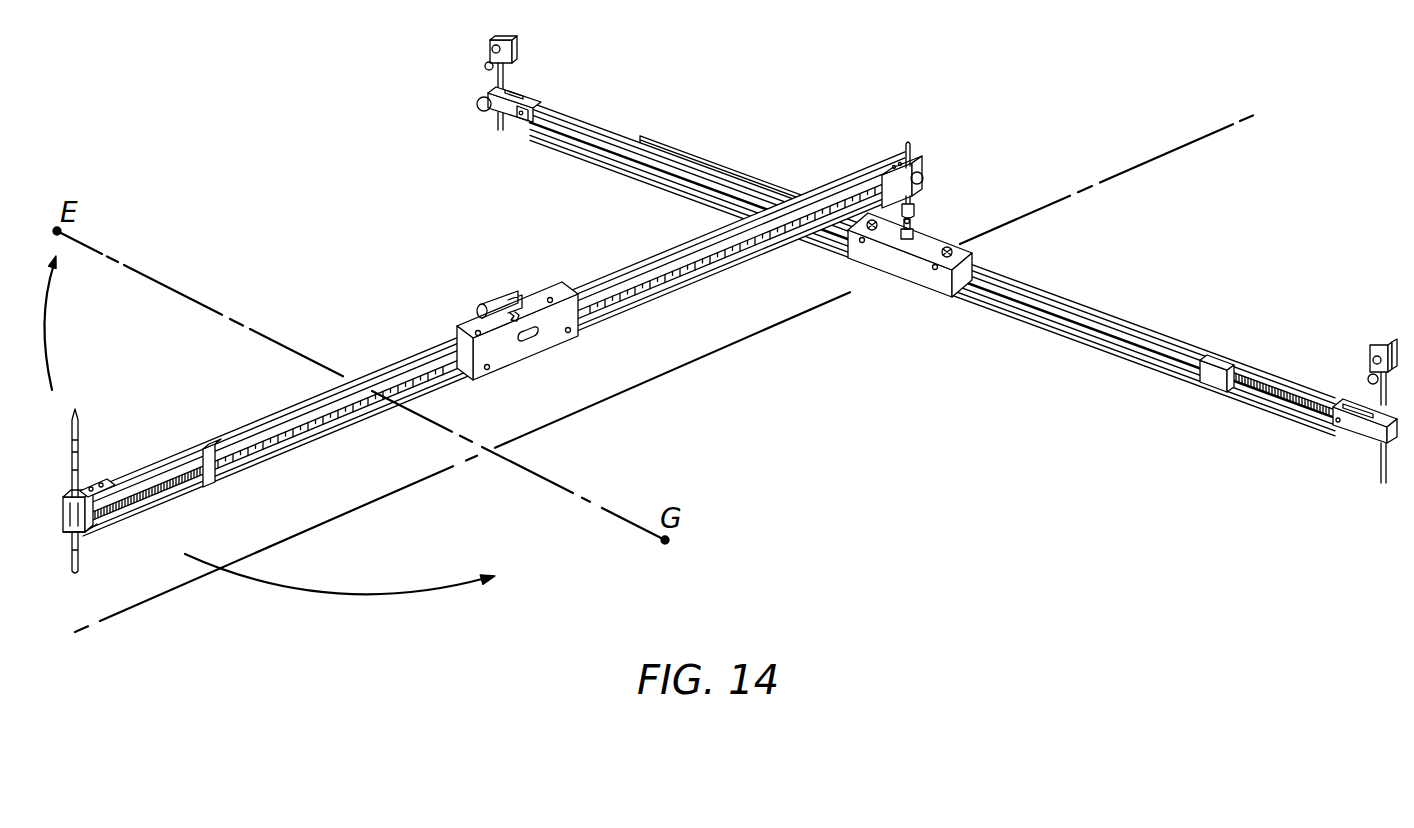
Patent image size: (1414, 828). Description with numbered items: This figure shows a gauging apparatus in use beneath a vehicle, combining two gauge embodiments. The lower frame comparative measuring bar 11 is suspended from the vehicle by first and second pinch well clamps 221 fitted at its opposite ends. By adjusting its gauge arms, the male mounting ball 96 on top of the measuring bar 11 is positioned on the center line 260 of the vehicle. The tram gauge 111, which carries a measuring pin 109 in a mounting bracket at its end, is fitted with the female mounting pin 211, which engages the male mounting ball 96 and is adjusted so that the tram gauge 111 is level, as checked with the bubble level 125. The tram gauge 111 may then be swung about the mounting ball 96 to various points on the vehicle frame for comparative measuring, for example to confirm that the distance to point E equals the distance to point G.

The lower frame comparative measuring bar 11 is at (598, 150).
The male mounting ball 96 is at (912, 228).
The measuring pin 109 is at (84, 453).
The tram gauge 111 is at (360, 373).
The bubble level 125 is at (513, 298).
The female mounting pin 211 is at (912, 145).
The pinch well clamp pin holder 221 is at (490, 64).
The center line 260 is at (630, 393).